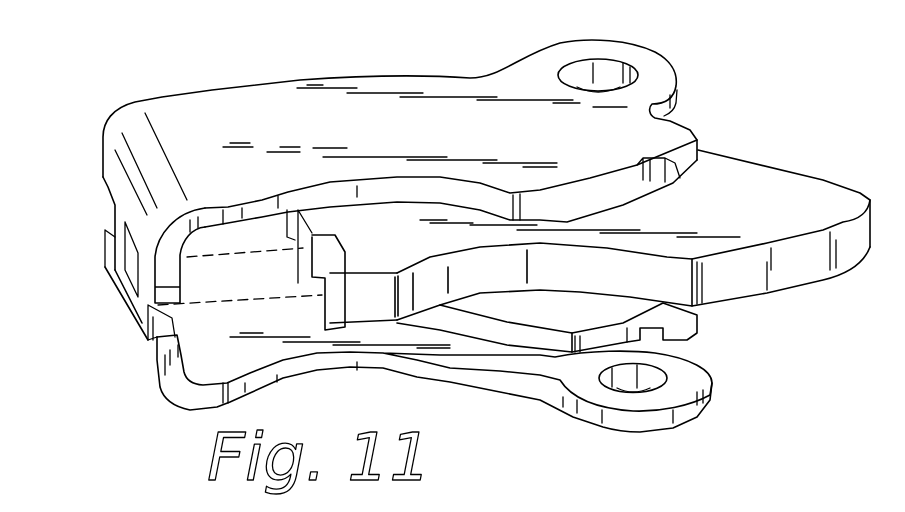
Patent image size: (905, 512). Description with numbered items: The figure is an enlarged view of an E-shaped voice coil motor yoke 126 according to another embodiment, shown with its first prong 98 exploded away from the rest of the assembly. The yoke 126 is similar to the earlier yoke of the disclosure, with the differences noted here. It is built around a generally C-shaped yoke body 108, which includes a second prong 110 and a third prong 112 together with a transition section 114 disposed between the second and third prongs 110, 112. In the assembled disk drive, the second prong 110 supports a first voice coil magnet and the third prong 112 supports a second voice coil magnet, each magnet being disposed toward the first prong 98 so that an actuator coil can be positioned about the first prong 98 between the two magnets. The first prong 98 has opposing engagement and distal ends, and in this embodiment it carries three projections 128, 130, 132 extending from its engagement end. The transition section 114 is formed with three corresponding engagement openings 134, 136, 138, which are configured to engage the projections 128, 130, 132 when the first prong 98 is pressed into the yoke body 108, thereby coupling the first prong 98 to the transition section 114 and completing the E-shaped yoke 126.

The first prong 98 is at (762, 209).
The yoke body 108 is at (272, 97).
The second prong 110 is at (560, 375).
The third prong 112 is at (417, 87).
The transition section 114 is at (115, 180).
The voice coil motor yoke 126 is at (138, 58).
The projection 128 is at (275, 213).
The projection 130 is at (300, 263).
The projection 132 is at (320, 305).
The engagement opening 134 is at (95, 222).
The engagement opening 136 is at (127, 263).
The engagement opening 138 is at (150, 306).